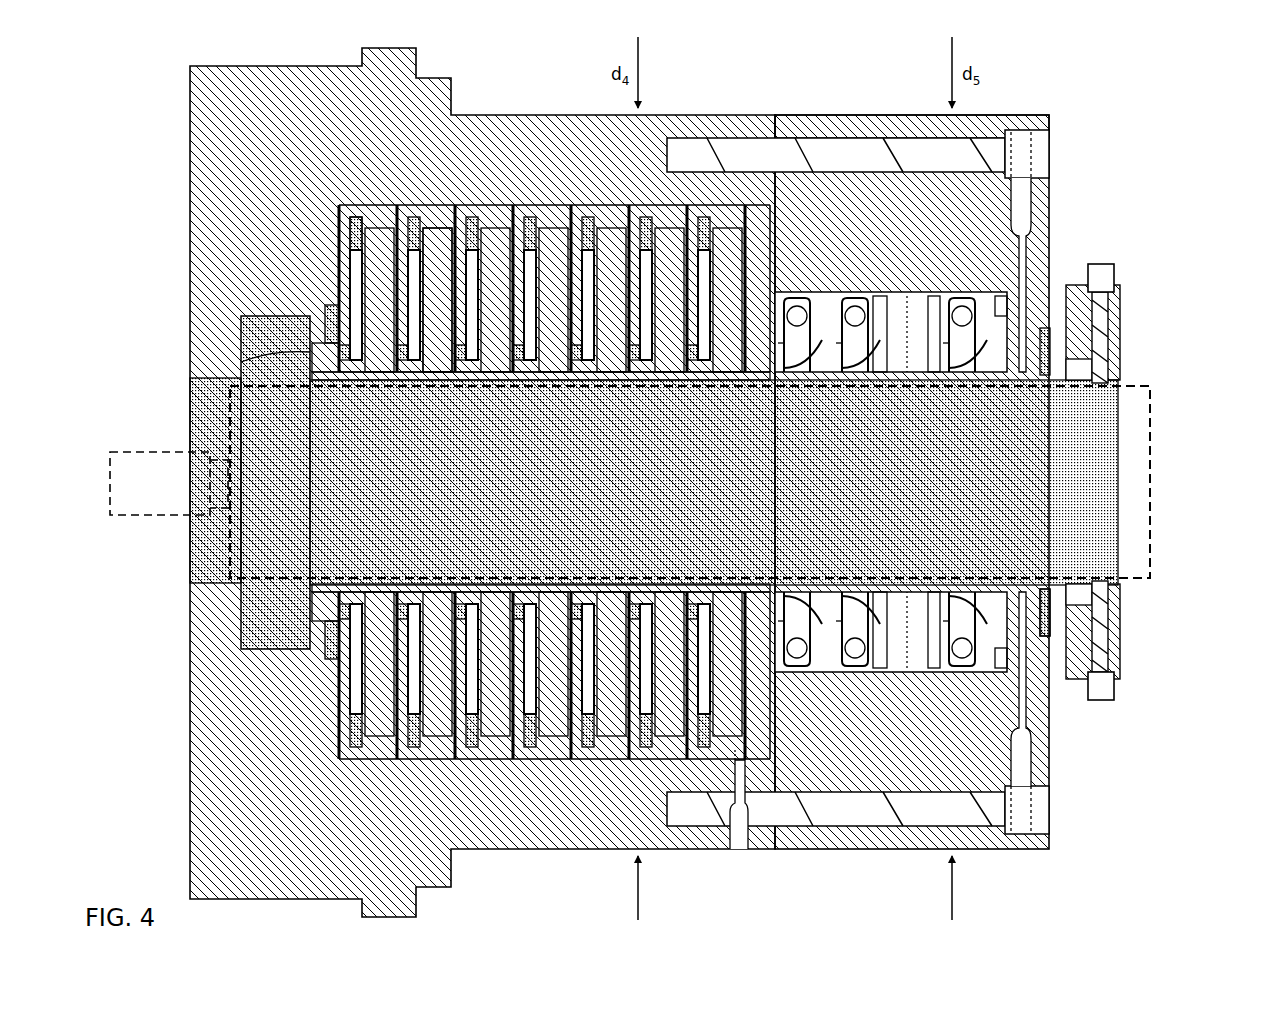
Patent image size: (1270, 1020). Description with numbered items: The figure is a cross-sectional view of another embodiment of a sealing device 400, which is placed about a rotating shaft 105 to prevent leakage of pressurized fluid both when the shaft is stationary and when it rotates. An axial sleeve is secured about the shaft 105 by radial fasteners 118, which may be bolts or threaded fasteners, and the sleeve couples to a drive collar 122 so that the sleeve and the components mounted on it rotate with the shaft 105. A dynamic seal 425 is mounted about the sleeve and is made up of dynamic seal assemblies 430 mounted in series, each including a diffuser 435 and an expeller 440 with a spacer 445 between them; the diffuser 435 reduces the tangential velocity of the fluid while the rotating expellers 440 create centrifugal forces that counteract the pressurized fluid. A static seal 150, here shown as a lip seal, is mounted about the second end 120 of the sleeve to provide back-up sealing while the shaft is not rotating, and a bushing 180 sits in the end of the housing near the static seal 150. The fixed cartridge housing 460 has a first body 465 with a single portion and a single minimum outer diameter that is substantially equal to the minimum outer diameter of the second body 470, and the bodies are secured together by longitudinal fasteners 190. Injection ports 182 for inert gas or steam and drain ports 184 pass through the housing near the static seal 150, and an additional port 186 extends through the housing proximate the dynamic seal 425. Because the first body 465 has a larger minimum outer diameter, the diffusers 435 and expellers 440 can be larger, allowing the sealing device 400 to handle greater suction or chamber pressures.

The sealing device 400 is at (176, 90).
The first body 465 is at (687, 115).
The fixed cartridge housing 460 is at (778, 103).
The second body 470 is at (895, 115).
The injection port 182 is at (1026, 130).
The radial fastener 118 is at (1100, 264).
The drive collar 122 is at (1120, 318).
The second end 120 is at (1120, 372).
The shaft 105 is at (1150, 456).
The static seal 150 is at (780, 398).
The dynamic seal 425 is at (342, 398).
The diffuser 435 is at (400, 372).
The expeller 440 is at (440, 372).
The spacer 445 is at (480, 372).
The dynamic seal assembly 430 is at (342, 574).
The bushing 180 is at (1054, 624).
The longitudinal fastener 190 is at (1050, 812).
The additional port 186 is at (738, 851).
The drain port 184 is at (1022, 851).